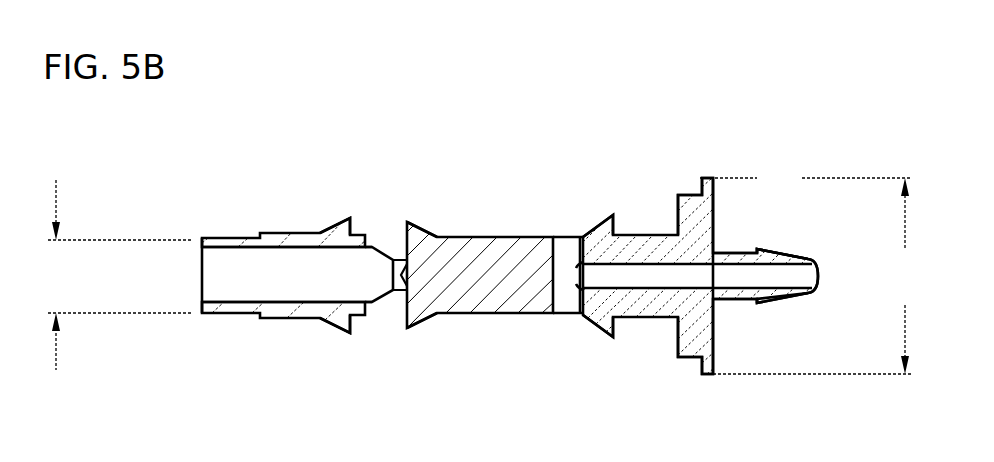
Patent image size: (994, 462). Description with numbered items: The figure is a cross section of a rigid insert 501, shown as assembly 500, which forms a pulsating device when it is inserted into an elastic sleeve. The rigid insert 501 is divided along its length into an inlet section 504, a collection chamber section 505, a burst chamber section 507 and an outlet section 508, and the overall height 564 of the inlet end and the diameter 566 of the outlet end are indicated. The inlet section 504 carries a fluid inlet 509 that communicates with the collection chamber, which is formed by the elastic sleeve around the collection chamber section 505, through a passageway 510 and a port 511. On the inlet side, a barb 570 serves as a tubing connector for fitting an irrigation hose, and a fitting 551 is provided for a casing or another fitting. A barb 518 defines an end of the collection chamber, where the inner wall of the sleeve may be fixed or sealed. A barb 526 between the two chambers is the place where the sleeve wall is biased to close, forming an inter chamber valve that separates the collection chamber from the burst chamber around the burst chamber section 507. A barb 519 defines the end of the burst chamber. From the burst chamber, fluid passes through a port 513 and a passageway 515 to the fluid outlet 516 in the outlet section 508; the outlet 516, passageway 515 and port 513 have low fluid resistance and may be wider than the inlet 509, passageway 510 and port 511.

The fluid connector assembly 500 is at (486, 228).
The rigid insert 501 is at (667, 149).
The inlet section 504 is at (813, 52).
The collection chamber section 505 is at (612, 52).
The burst chamber section 507 is at (348, 52).
The outlet section 508 is at (348, 52).
The fluid inlet 509 is at (818, 268).
The passageway 510 is at (663, 272).
The port 511 is at (560, 290).
The port 513 is at (380, 304).
The passageway 515 is at (262, 280).
The fluid outlet 516 is at (222, 275).
The barb 518 is at (613, 216).
The barb 519 is at (338, 216).
The barb 526 is at (417, 222).
The fitting 551 is at (705, 378).
The flange height 564 is at (816, 276).
The tube diameter 566 is at (116, 275).
The barb 570 is at (789, 258).